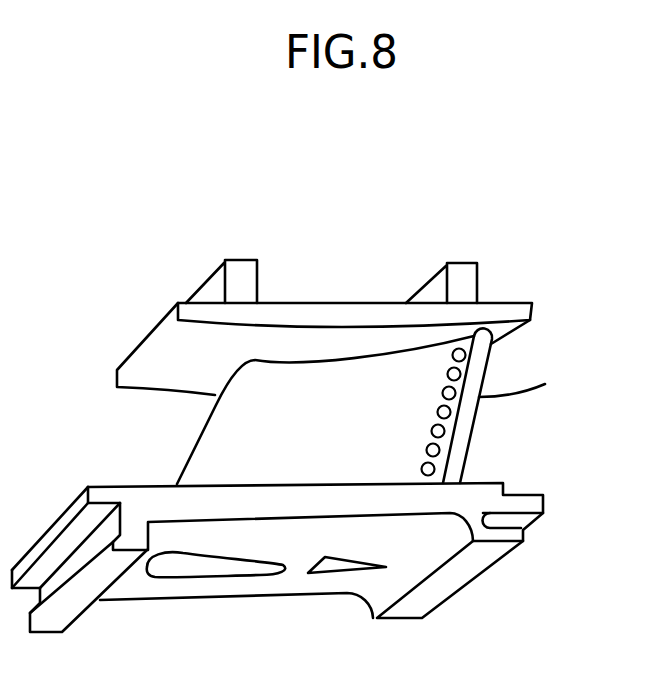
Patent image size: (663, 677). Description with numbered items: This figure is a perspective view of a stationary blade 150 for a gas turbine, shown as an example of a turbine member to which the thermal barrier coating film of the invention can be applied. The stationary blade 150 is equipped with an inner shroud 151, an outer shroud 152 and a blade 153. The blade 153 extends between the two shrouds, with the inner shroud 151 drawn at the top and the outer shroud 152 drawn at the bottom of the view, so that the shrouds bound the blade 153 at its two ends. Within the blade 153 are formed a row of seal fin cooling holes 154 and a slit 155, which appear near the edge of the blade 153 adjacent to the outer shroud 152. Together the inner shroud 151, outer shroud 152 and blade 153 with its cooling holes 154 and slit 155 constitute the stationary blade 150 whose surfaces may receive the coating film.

The stationary blade 150 is at (408, 183).
The inner shroud 151 is at (353, 313).
The outer shroud 152 is at (485, 498).
The blade 153 is at (395, 413).
The seal fin cooling holes 154 is at (458, 393).
The slit 155 is at (452, 457).